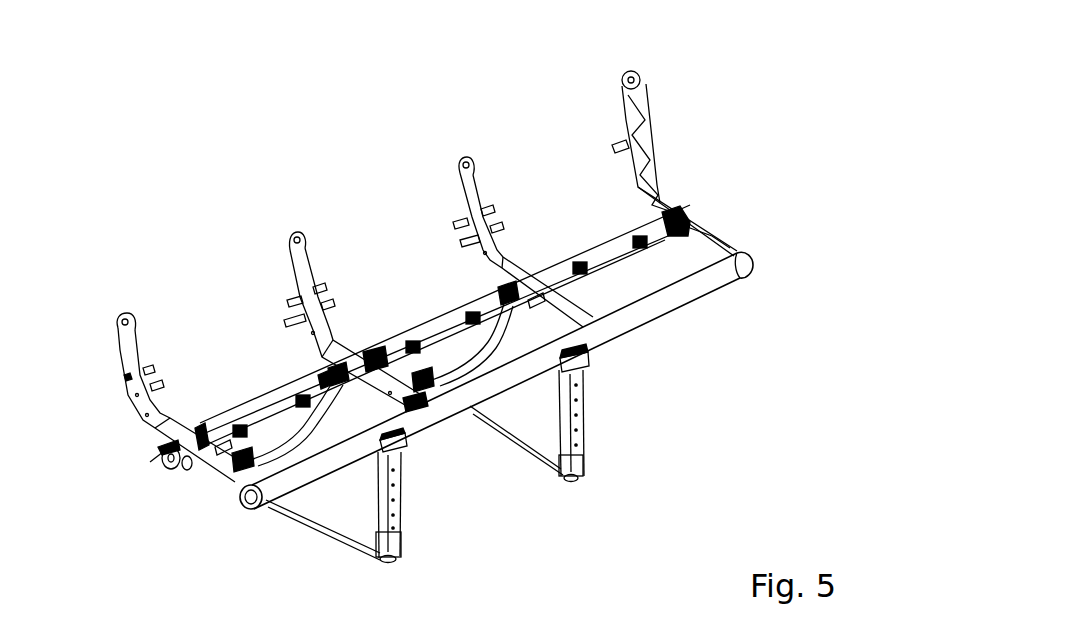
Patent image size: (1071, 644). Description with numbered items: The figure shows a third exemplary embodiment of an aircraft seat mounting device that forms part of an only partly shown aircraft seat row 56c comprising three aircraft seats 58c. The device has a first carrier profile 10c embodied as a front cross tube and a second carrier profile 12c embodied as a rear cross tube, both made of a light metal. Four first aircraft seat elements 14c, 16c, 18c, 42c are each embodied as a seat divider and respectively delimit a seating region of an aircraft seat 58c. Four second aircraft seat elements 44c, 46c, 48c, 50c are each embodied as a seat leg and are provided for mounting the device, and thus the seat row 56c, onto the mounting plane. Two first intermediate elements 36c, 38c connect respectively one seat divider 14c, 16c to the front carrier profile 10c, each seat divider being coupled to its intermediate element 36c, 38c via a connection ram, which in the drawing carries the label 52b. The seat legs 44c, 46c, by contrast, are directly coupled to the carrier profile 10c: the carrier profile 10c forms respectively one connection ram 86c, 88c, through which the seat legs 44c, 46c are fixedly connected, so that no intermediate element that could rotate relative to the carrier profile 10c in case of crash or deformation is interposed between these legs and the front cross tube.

The first carrier profile 10c is at (727, 274).
The second carrier profile 12c is at (583, 257).
The first aircraft seat element 14c is at (298, 282).
The first aircraft seat element 16c is at (462, 192).
The first aircraft seat element 18c is at (148, 335).
The first intermediate element 36c is at (440, 413).
The first intermediate element 38c is at (610, 330).
The first aircraft seat element 42c is at (650, 108).
The second aircraft seat element 44c is at (384, 492).
The second aircraft seat element 46c is at (563, 431).
The second aircraft seat element 48c is at (287, 453).
The second aircraft seat element 50c is at (457, 367).
The clamp bracket 52b is at (407, 402).
The aircraft seat row 56c is at (198, 510).
The aircraft seat 58c is at (205, 307).
The connection ram 86c is at (403, 440).
The connection ram 88c is at (586, 356).